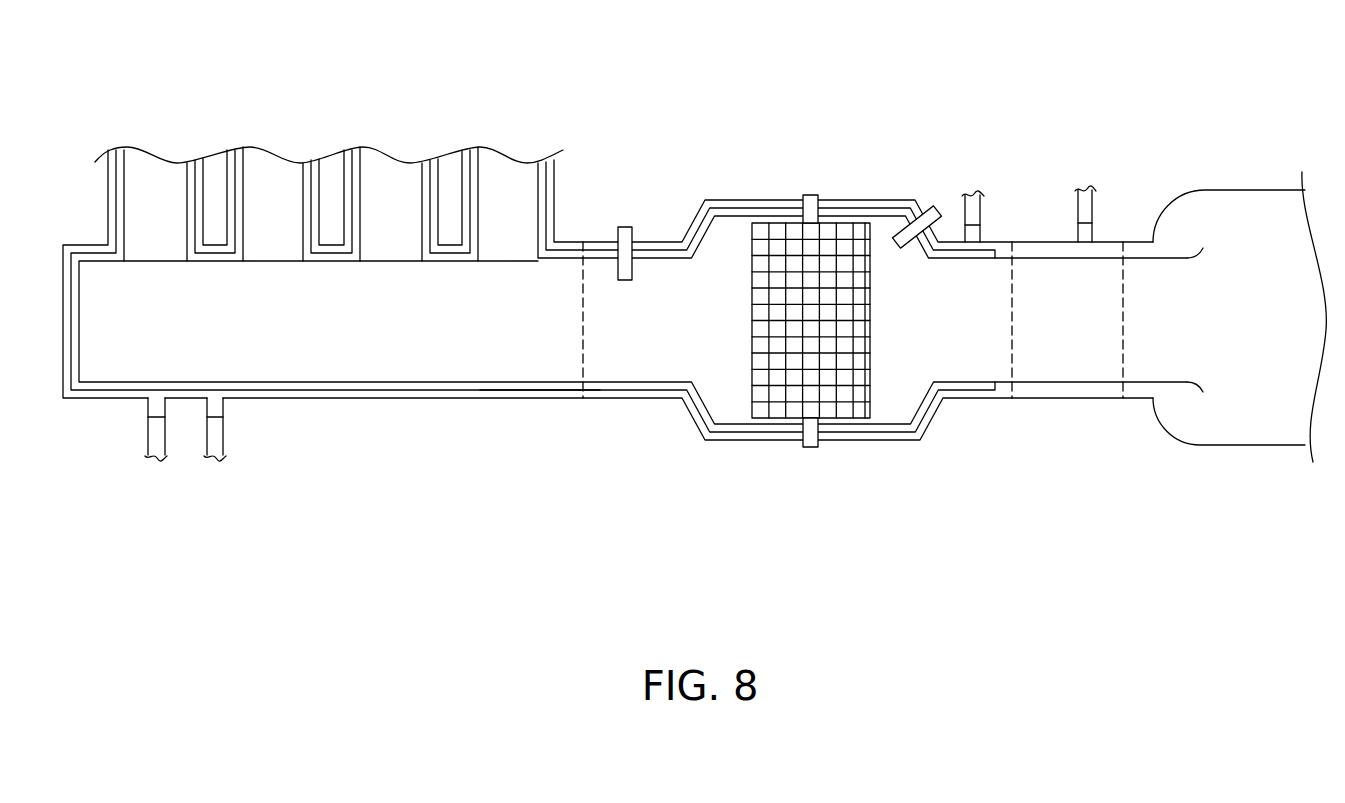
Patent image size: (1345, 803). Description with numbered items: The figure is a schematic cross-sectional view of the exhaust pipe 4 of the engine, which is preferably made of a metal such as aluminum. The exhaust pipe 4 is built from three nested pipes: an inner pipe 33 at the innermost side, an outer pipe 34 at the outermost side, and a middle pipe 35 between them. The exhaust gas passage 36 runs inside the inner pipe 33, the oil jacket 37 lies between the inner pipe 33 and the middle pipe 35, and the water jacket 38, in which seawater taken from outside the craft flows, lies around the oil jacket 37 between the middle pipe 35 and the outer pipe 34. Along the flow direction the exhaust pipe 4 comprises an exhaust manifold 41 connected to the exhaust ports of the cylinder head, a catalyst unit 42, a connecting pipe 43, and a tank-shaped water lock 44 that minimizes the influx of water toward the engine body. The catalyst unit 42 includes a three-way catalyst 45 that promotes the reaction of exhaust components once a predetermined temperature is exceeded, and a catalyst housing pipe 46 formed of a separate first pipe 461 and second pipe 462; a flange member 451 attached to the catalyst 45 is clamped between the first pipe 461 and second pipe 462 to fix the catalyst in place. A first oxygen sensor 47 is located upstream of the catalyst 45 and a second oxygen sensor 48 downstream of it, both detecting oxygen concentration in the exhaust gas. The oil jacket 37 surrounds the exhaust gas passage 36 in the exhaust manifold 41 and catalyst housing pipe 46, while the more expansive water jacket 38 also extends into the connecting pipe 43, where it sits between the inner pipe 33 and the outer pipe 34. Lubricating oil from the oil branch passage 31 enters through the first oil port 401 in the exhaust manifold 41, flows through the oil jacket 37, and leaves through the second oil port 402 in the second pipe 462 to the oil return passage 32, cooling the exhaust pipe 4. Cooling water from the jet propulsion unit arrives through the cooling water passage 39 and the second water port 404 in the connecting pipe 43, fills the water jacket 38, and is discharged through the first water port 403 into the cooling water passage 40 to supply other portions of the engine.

The exhaust pipe 4 is at (663, 118).
The oil branch passage 31 is at (216, 460).
The oil return passage 32 is at (972, 192).
The inner pipe 33 is at (372, 384).
The outer pipe 34 is at (293, 400).
The middle pipe 35 is at (333, 392).
The exhaust gas passage 36 is at (458, 358).
The oil jacket 37 is at (522, 388).
The water jacket 38 is at (567, 394).
The cooling water passage 39 is at (1091, 189).
The cooling water passage 40 is at (157, 460).
The exhaust manifold 41 is at (412, 414).
The catalyst unit 42 is at (775, 456).
The connecting pipe 43 is at (1045, 414).
The water lock 44 is at (1233, 458).
The catalyst 45 is at (760, 248).
The catalyst housing pipe 46 is at (758, 110).
The first oxygen sensor 47 is at (628, 226).
The second oxygen sensor 48 is at (938, 212).
The first oil port 401 is at (224, 412).
The second oil port 402 is at (981, 240).
The first water port 403 is at (147, 410).
The second water port 404 is at (1094, 232).
The flange member 451 is at (812, 449).
The first pipe 461 is at (784, 196).
The second pipe 462 is at (862, 198).